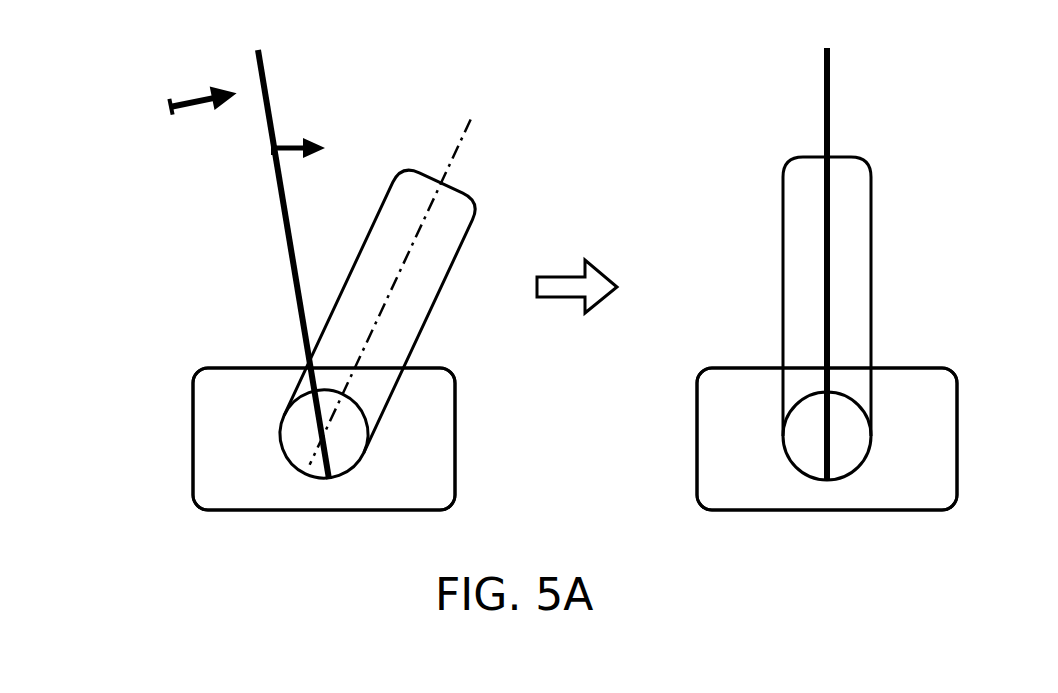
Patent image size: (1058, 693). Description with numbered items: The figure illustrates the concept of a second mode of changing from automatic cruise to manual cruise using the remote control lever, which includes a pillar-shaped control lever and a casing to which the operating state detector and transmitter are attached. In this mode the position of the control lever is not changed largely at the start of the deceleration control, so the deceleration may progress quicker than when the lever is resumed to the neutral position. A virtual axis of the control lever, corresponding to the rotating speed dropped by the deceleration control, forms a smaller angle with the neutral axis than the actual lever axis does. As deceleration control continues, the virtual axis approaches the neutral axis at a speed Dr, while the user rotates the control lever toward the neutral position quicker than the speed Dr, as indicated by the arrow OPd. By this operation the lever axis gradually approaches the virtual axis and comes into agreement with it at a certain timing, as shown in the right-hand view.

The speed Dr is at (290, 143).
The arrow OPd is at (192, 97).